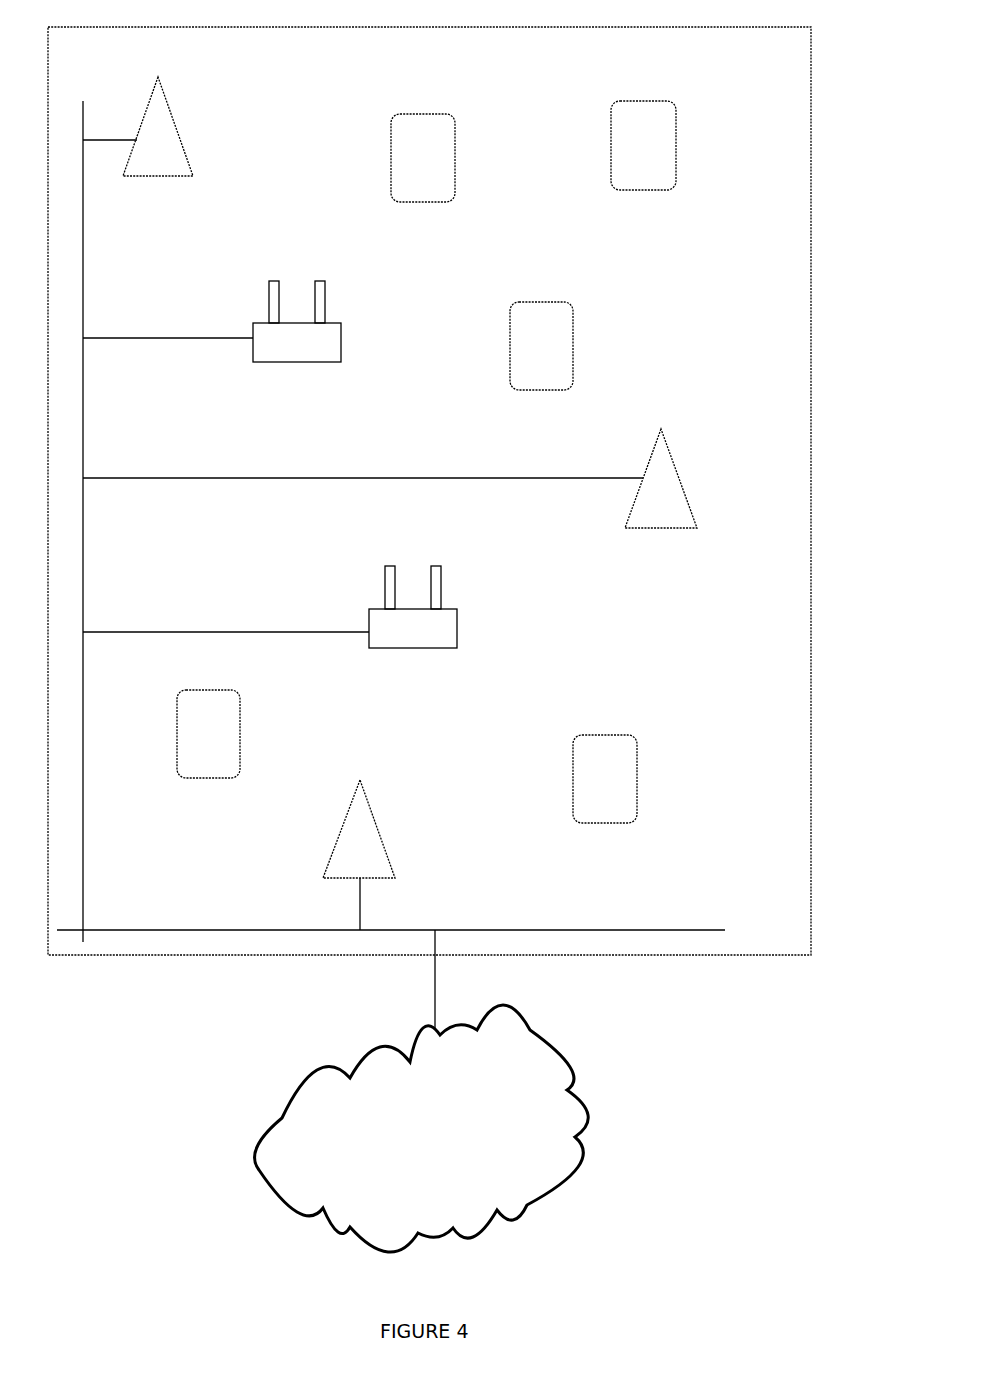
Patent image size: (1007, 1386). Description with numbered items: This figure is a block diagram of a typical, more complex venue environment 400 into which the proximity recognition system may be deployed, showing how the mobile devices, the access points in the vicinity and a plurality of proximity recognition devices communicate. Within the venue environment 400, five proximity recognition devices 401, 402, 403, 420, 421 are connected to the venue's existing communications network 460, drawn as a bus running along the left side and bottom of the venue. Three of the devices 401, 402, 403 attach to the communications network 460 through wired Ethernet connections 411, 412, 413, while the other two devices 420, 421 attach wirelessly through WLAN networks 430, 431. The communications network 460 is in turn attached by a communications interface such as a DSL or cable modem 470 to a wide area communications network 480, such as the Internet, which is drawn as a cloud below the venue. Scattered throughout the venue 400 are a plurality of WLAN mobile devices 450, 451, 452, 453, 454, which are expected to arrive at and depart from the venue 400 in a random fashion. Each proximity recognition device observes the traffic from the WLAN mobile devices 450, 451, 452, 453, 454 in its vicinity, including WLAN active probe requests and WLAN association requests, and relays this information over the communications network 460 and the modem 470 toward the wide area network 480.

The deployment venue environment 400 is at (431, 479).
The proximity recognition device 401 is at (172, 126).
The proximity recognition device 402 is at (679, 478).
The proximity recognition device 403 is at (378, 829).
The Ethernet connection 411 is at (110, 128).
The Ethernet connection 412 is at (363, 468).
The Ethernet connection 413 is at (382, 904).
The proximity recognition device 420 is at (318, 321).
The proximity recognition device 421 is at (435, 607).
The WLAN network 430 is at (168, 327).
The WLAN network 431 is at (226, 620).
The WLAN mobile device 450 is at (230, 734).
The WLAN mobile device 451 is at (446, 158).
The WLAN mobile device 452 is at (664, 145).
The WLAN mobile device 453 is at (561, 346).
The WLAN mobile device 454 is at (625, 779).
The venue communications network 460 is at (391, 521).
The communications interface 470 is at (412, 980).
The wide area communications network 480 is at (446, 1128).